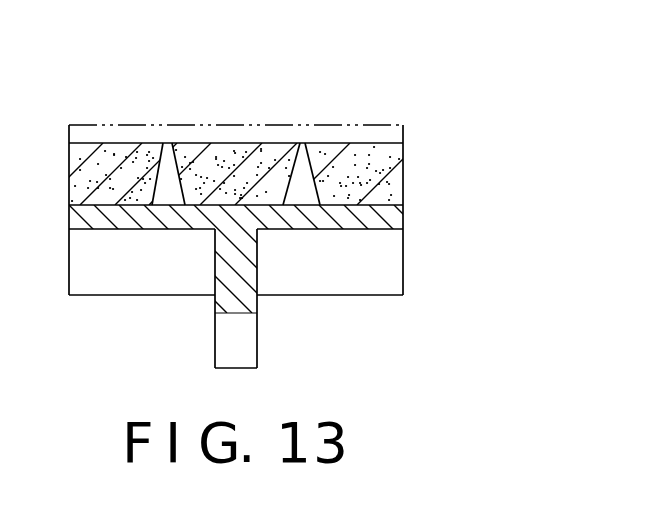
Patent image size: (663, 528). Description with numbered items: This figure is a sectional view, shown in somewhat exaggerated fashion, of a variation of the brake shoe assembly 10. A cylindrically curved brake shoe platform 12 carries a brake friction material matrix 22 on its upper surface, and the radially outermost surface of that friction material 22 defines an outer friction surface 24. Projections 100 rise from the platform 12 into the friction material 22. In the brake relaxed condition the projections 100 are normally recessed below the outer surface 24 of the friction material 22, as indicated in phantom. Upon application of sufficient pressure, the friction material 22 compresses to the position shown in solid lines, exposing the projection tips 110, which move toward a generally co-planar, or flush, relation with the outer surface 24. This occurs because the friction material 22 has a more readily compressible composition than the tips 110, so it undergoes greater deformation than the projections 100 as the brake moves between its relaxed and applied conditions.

The brake shoe assembly 10 is at (349, 312).
The brake shoe platform 12 is at (402, 212).
The brake friction material matrix 22 is at (390, 179).
The outer friction surface 24 is at (377, 126).
The projections 100 is at (155, 178).
The projection tips 110 is at (167, 143).